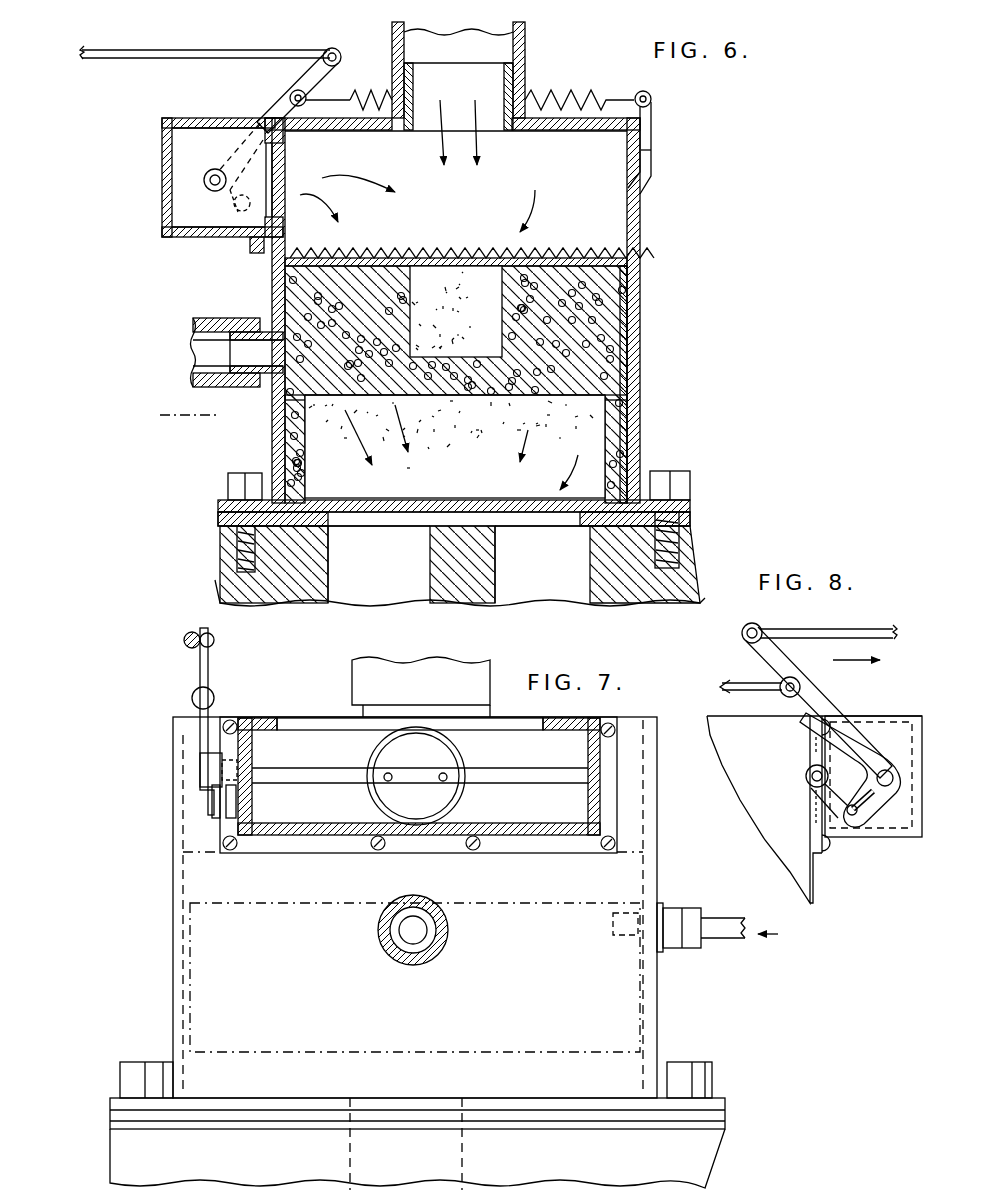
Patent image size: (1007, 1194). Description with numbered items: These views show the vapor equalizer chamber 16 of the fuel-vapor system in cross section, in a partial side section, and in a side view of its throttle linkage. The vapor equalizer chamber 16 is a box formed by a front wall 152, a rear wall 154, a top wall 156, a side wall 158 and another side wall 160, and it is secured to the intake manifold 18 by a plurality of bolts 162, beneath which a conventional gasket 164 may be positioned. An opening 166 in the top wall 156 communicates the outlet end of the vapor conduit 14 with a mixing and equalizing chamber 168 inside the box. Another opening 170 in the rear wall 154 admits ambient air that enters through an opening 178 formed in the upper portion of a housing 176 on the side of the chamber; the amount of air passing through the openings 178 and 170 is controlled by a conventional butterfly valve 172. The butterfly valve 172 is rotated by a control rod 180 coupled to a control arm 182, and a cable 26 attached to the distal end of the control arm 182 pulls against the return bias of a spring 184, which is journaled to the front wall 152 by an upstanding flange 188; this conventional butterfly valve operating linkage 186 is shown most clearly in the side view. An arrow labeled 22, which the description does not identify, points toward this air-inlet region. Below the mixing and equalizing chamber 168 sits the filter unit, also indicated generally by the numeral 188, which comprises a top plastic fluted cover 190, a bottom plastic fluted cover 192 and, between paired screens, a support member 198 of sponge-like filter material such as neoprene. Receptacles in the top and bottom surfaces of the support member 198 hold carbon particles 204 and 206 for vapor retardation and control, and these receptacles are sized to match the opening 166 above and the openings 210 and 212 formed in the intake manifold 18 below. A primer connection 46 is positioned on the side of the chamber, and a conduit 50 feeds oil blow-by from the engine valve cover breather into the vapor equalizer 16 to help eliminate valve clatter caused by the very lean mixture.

In FIG. 6, the vapor conduit 14 is at (528, 55).
In FIG. 7, the vapor conduit 14 is at (492, 672).
In FIG. 6, the vapor equalizer chamber 16 is at (722, 252).
In FIG. 6, the intake manifold 18 is at (700, 560).
In FIG. 7, the intake manifold 18 is at (710, 1165).
In FIG. 6, the valve assembly 22 is at (130, 290).
In FIG. 6, the cable 26 is at (105, 60).
In FIG. 8, the cable 26 is at (840, 632).
In FIG. 7, the primer connection 46 is at (700, 952).
In FIG. 6, the conduit 50 is at (258, 308).
In FIG. 7, the conduit 50 is at (450, 950).
In FIG. 6, the front wall 152 is at (628, 322).
In FIG. 6, the rear wall 154 is at (270, 438).
In FIG. 6, the top wall 156 is at (615, 132).
In FIG. 7, the side wall 158 is at (200, 885).
In FIG. 8, the side wall 160 is at (793, 874).
In FIG. 6, the bolts 162 is at (235, 488).
In FIG. 7, the bolts 162 is at (130, 1062).
In FIG. 6, the gasket 164 is at (690, 508).
In FIG. 7, the gasket 164 is at (722, 1118).
In FIG. 6, the opening 166 is at (492, 95).
In FIG. 6, the mixing and equalizing chamber 168 is at (585, 215).
In FIG. 6, the opening 170 is at (283, 168).
In FIG. 7, the butterfly valve 172 is at (447, 790).
In FIG. 6, the housing 176 is at (190, 240).
In FIG. 7, the housing 176 is at (435, 835).
In FIG. 6, the opening 178 is at (200, 118).
In FIG. 7, the opening 178 is at (305, 718).
In FIG. 6, the control rod 180 is at (215, 180).
In FIG. 8, the control rod 180 is at (805, 772).
In FIG. 6, the control arm 182 is at (290, 96).
In FIG. 7, the control arm 182 is at (212, 668).
In FIG. 8, the control arm 182 is at (830, 706).
In FIG. 6, the spring 184 is at (595, 95).
In FIG. 8, the spring 184 is at (752, 682).
In FIG. 6, the butterfly valve operating linkage 186 is at (205, 190).
In FIG. 7, the butterfly valve operating linkage 186 is at (212, 805).
In FIG. 8, the butterfly valve operating linkage 186 is at (880, 830).
In FIG. 6, the filter unit 188 is at (652, 145).
In FIG. 6, the top plastic fluted cover 190 is at (640, 244).
In FIG. 6, the bottom plastic fluted cover 192 is at (632, 470).
In FIG. 6, the support member 198 is at (640, 392).
In FIG. 6, the carbon particles 204 is at (488, 300).
In FIG. 6, the carbon particles 206 is at (600, 465).
In FIG. 6, the opening 210 is at (392, 585).
In FIG. 6, the opening 212 is at (500, 585).